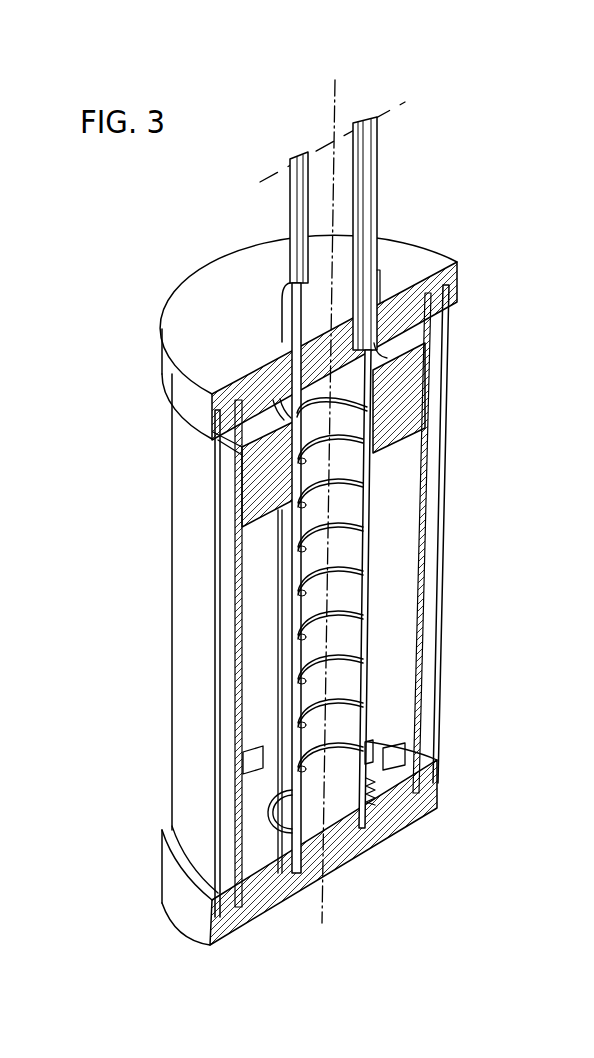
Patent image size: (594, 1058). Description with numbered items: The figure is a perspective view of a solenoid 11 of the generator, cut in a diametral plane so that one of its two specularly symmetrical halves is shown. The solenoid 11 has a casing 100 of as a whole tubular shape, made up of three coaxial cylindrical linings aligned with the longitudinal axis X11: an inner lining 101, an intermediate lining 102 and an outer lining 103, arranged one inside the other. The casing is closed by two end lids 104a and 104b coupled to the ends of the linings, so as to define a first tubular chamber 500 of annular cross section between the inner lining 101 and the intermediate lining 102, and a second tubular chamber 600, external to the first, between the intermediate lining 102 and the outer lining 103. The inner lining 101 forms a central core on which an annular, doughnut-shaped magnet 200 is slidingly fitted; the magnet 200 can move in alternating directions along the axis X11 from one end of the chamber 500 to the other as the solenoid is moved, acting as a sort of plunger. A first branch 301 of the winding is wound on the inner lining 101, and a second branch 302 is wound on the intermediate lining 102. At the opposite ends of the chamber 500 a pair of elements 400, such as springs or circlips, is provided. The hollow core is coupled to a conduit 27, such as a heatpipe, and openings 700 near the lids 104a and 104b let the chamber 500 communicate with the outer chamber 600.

The solenoid 11 is at (311, 517).
The conduit 27 is at (290, 221).
The casing 100 is at (427, 240).
The inner lining 101 is at (280, 706).
The intermediate lining 102 is at (235, 638).
The outer lining 103 is at (192, 513).
The end lid 104a is at (203, 302).
The end lid 104b is at (267, 900).
The magnet 200 is at (393, 438).
The first branch of the winding 301 is at (343, 667).
The second branch of the winding 302 is at (442, 579).
The elements 400 is at (400, 347).
The first tubular chamber 500 is at (393, 631).
The second tubular chamber 600 is at (228, 585).
The openings 700 is at (248, 788).
The longitudinal axis X11 is at (336, 93).